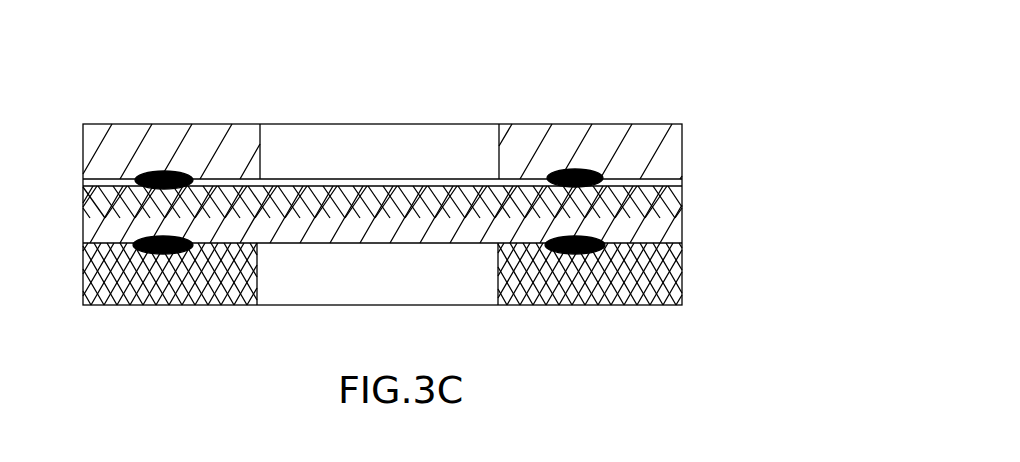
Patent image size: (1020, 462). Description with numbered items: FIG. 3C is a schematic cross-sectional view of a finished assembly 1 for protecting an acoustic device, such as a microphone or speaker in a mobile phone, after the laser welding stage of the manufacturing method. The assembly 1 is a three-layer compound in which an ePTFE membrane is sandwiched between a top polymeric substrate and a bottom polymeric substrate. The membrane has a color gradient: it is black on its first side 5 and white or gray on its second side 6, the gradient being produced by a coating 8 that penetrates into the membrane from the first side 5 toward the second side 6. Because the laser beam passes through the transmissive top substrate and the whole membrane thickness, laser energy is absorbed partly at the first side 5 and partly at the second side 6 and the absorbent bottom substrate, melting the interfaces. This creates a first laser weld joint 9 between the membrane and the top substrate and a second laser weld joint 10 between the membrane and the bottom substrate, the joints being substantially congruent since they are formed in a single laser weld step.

The assembly 1 is at (742, 70).
The first side 5 is at (683, 180).
The second side 6 is at (682, 243).
The coating 8 is at (82, 183).
The first laser weld joint 9 is at (156, 172).
The second laser weld joint 10 is at (165, 252).